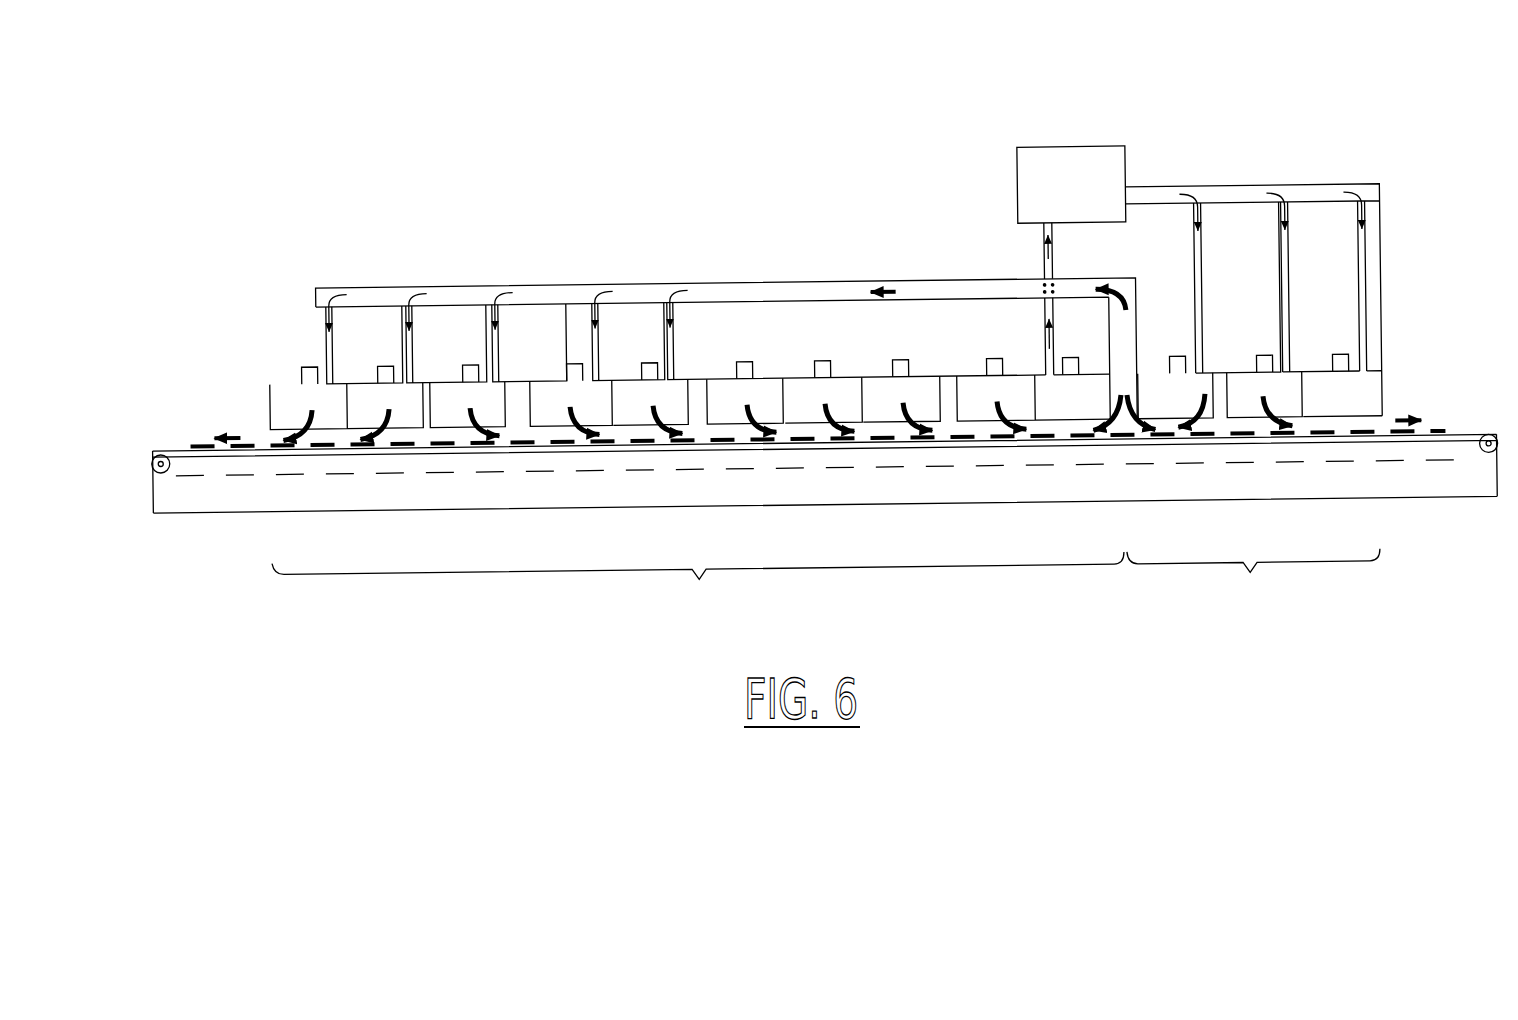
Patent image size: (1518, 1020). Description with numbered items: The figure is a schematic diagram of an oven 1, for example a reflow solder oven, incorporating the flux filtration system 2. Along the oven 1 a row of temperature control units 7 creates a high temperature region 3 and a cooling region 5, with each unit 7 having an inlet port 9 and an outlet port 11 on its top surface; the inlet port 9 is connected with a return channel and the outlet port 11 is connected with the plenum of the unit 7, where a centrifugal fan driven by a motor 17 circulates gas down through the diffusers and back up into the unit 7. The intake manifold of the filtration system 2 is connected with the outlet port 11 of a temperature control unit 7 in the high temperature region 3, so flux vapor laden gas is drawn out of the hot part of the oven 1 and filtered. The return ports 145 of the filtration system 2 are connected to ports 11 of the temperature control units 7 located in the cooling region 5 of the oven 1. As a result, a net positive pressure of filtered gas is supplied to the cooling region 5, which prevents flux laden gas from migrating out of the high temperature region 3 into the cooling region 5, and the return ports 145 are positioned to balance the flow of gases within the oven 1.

The oven 1 is at (297, 238).
The filtration system 2 is at (1210, 172).
The high temperature region 3 is at (698, 584).
The cooling region 5 is at (1254, 578).
The temperature control unit 7 is at (826, 397).
The inlet port 9 is at (340, 376).
The outlet port 11 is at (1045, 375).
The motor 17 is at (1045, 258).
The return ports 145 is at (1204, 276).